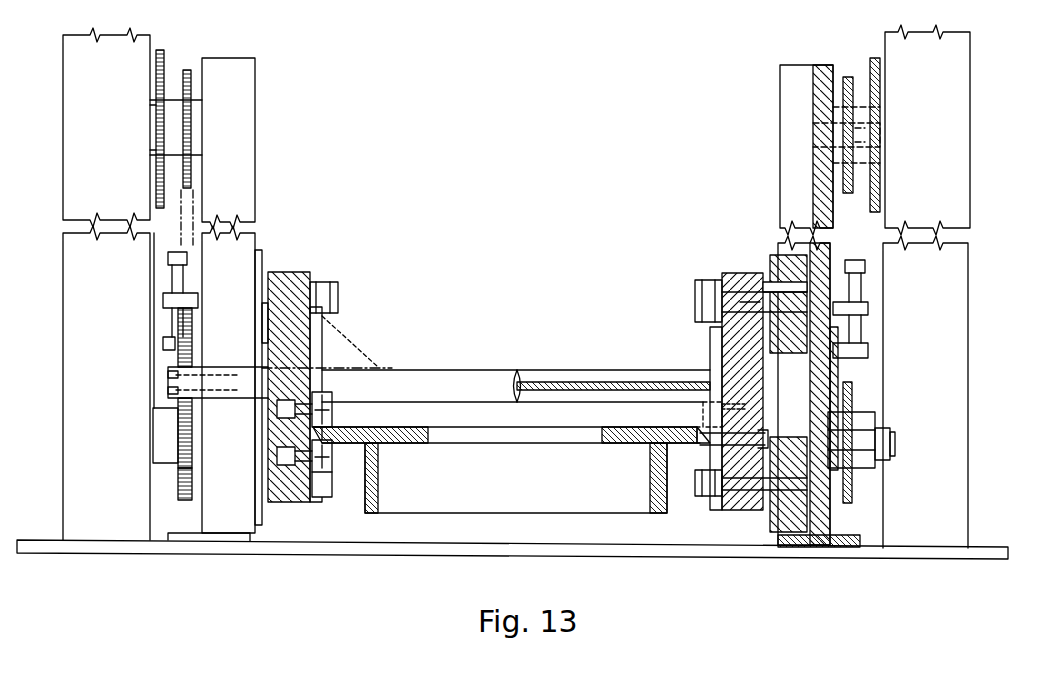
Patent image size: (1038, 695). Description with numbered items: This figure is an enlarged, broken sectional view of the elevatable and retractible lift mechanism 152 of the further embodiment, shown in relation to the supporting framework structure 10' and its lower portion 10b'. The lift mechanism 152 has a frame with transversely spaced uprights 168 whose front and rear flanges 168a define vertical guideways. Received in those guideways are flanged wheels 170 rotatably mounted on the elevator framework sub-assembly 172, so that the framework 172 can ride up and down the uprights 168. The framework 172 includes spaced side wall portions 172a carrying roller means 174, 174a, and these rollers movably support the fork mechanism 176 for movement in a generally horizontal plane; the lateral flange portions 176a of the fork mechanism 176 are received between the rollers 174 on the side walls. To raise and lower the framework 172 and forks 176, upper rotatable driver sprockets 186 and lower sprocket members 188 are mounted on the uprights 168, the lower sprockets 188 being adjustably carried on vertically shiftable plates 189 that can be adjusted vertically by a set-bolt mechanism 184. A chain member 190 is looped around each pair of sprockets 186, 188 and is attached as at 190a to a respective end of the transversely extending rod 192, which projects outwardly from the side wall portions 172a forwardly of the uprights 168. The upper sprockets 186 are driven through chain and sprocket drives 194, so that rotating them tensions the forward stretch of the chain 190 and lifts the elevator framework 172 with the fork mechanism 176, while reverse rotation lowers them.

The supporting framework structure 10' is at (499, 130).
The frame base member 10b' is at (519, 370).
The lift mechanism 152 is at (525, 314).
The uprights 168 is at (255, 100).
The front and rear flanges 168a is at (247, 240).
The flanged wheels 170 is at (258, 262).
The framework sub-assembly 172 is at (327, 273).
The side wall portions 172a is at (305, 340).
The roller means 174 is at (332, 400).
The roller means 174a is at (765, 436).
The fork mechanism 176 is at (410, 448).
The lateral flange portions 176a is at (337, 428).
The set-bolt mechanism 184 is at (168, 258).
The upper driver sprockets 186 is at (188, 70).
The lower sprocket members 188 is at (180, 492).
The vertically shiftable plates 189 is at (178, 470).
The chain member 190 is at (190, 333).
The chain attachment 190a is at (168, 380).
The transversely extending rod 192 is at (430, 372).
The chain and sprocket drives 194 is at (160, 50).